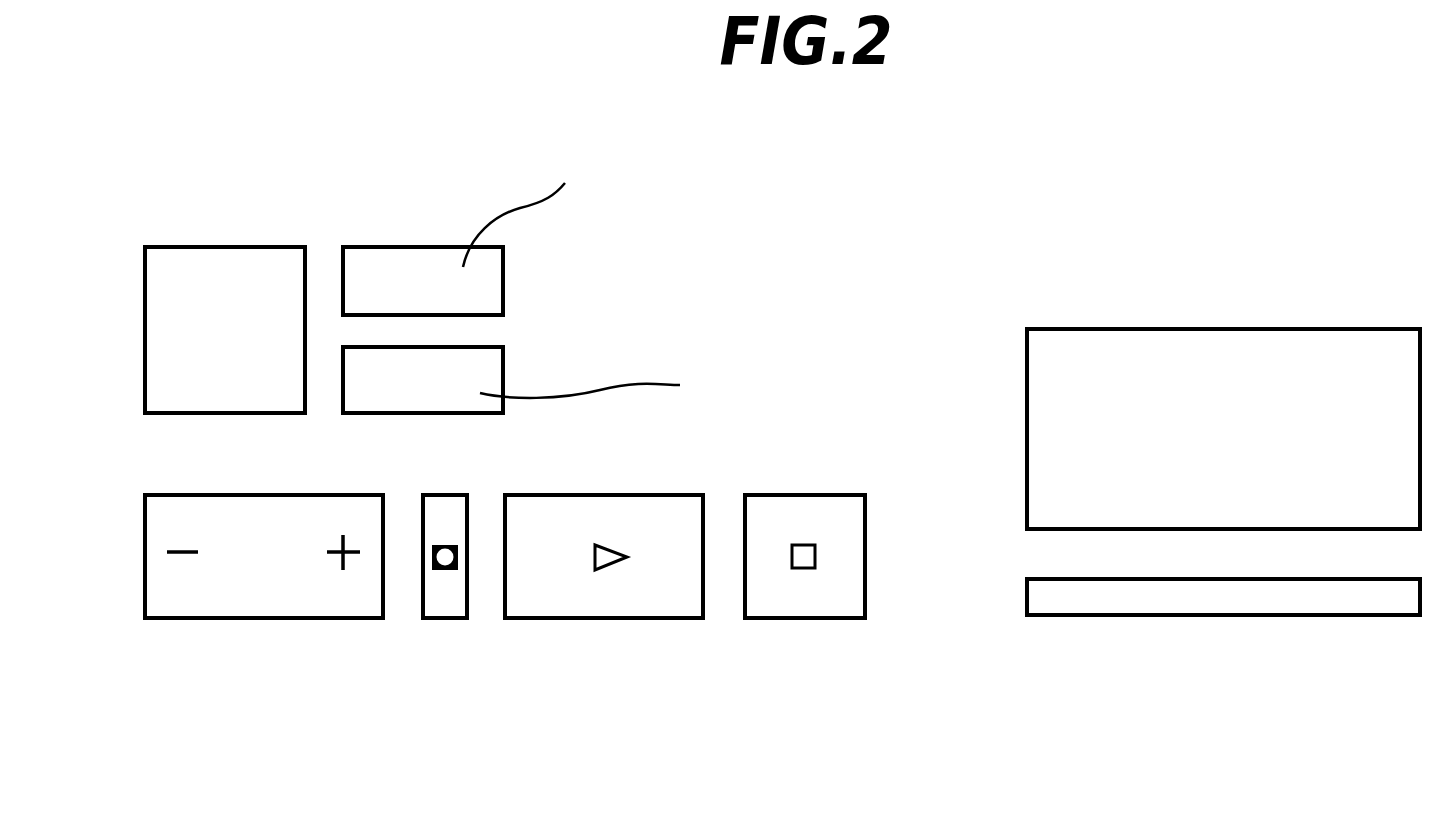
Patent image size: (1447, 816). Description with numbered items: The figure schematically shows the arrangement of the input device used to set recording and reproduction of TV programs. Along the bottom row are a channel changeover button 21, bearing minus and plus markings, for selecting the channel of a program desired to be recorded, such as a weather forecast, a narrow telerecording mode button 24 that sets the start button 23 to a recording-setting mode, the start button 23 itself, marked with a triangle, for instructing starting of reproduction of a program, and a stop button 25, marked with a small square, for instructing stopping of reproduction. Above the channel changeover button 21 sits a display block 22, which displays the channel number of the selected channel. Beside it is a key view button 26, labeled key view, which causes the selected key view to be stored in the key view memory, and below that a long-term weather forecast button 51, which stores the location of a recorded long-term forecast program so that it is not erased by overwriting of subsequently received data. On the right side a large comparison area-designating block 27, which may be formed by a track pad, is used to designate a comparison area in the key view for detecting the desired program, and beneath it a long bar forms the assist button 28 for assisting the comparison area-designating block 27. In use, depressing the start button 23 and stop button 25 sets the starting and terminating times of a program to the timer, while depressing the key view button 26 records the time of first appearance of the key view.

The channel changeover button 21 is at (272, 618).
The display block 22 is at (217, 247).
The start button 23 is at (615, 618).
The telerecording mode button 24 is at (445, 618).
The stop button 25 is at (802, 618).
The key view button 26 is at (400, 247).
The comparison area-designating block 27 is at (1236, 329).
The assist button 28 is at (1135, 615).
The long-term weather forecast button 51 is at (503, 365).